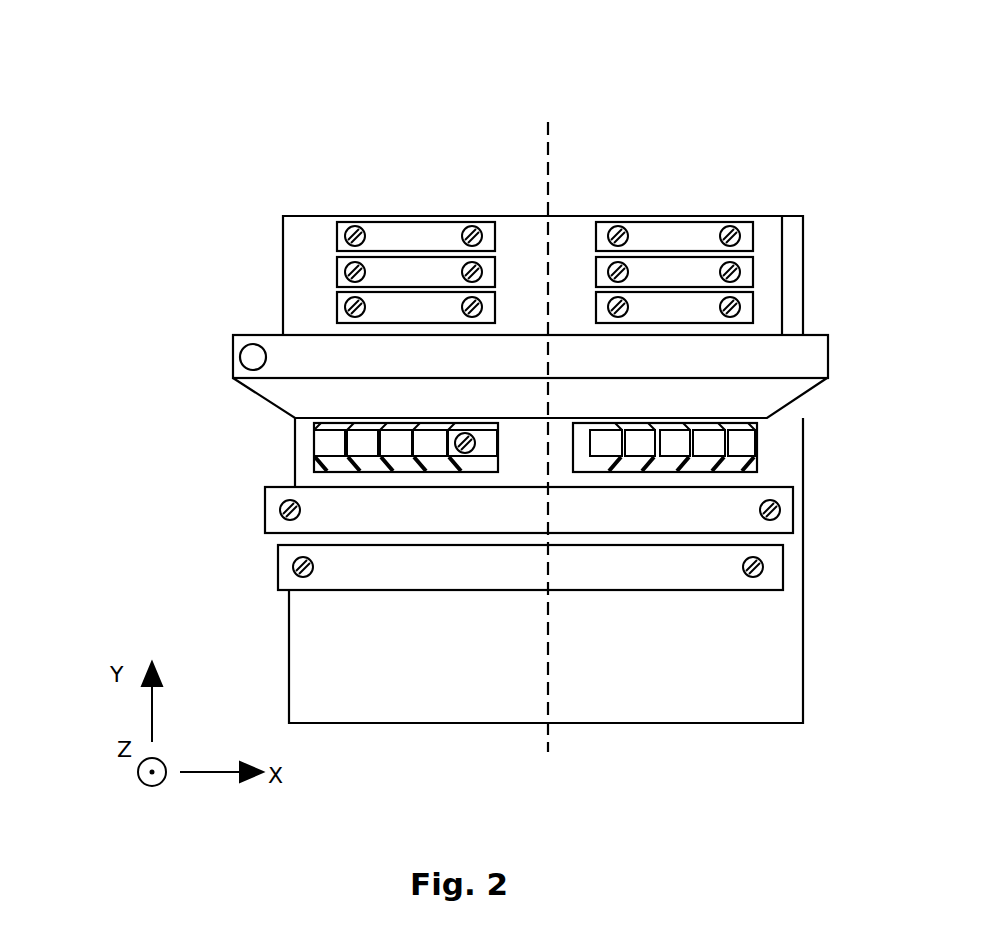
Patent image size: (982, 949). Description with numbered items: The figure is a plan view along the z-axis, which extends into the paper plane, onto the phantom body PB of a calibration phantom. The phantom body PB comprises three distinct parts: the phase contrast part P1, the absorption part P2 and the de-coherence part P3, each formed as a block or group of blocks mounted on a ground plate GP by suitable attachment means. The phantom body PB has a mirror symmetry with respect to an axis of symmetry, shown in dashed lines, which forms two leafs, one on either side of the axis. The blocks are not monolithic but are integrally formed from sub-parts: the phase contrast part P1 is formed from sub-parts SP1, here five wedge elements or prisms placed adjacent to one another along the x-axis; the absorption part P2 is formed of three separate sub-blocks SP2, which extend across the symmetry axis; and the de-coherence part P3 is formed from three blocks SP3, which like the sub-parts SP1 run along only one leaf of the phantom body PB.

The phantom body PB is at (623, 120).
The ground plate GP is at (703, 673).
The de-coherence part P3 is at (317, 255).
The absorption part P2 is at (158, 332).
The phase contrast part P1 is at (307, 445).
The sub-parts of phase contrast part SP1 is at (333, 447).
The sub-parts of absorption part SP2 is at (253, 351).
The sub-parts of de-coherence part SP3 is at (443, 305).